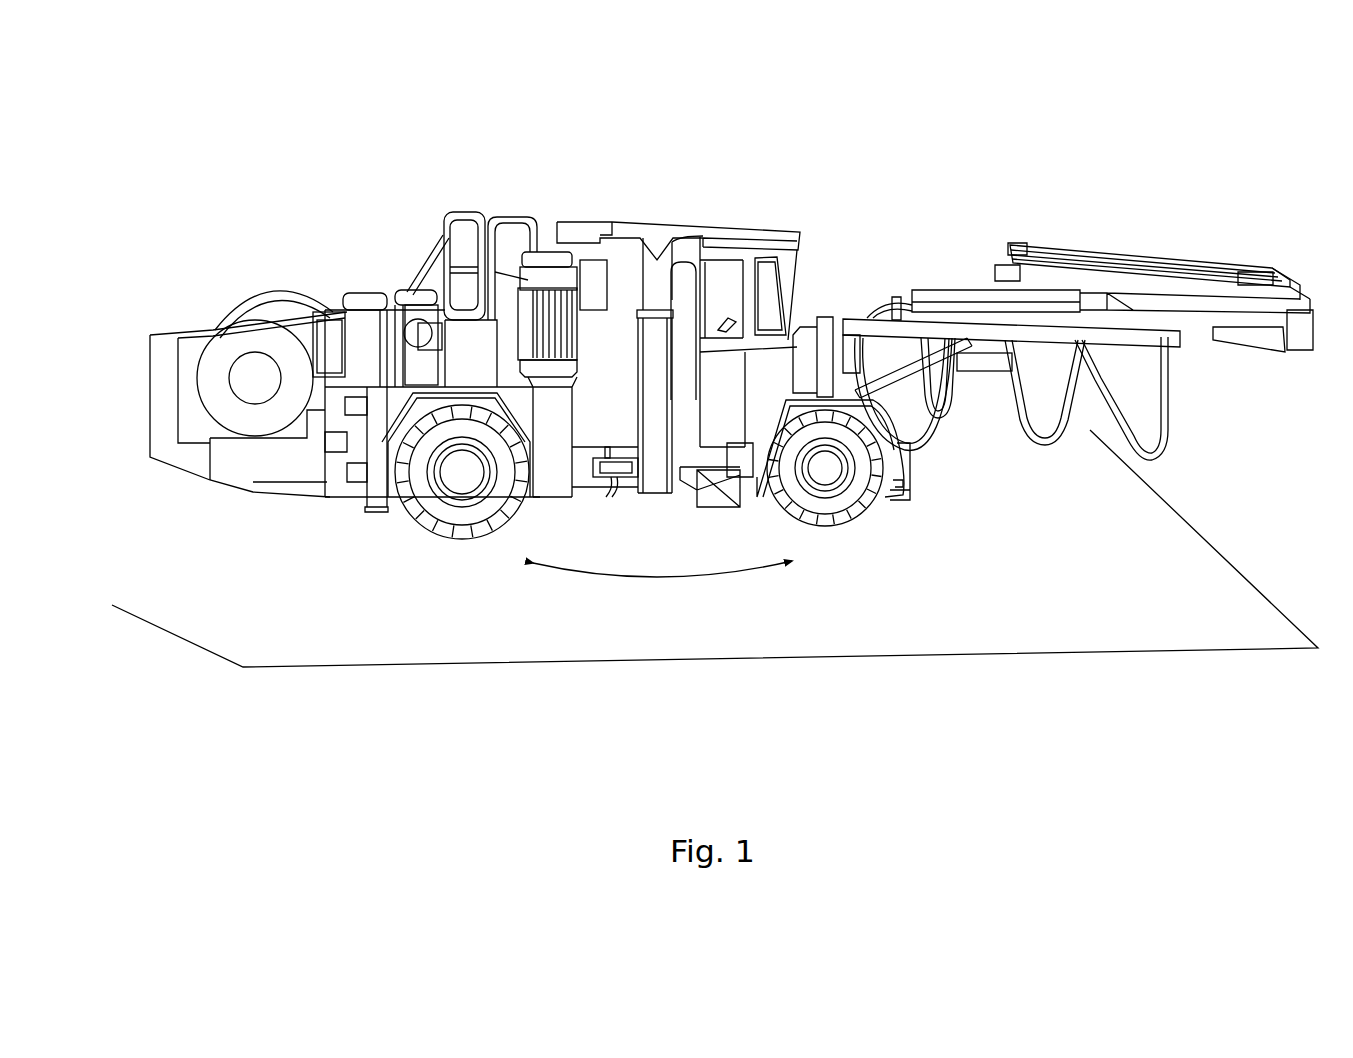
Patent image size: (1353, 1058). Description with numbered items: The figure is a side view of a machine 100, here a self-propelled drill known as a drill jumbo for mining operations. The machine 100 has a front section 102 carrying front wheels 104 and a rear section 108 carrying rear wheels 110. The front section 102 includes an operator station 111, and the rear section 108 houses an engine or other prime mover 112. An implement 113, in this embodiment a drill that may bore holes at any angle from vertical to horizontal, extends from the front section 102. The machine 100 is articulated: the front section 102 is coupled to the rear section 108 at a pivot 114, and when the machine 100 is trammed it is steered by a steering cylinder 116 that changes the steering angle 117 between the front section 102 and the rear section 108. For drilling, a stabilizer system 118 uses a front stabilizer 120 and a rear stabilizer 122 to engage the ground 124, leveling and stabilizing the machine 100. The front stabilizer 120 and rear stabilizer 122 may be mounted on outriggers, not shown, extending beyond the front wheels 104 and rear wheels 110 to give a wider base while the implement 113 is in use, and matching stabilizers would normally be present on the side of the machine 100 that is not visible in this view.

The machine 100 is at (562, 110).
The front section 102 is at (705, 228).
The front wheels 104 is at (837, 530).
The rear section 108 is at (218, 328).
The rear wheels 110 is at (437, 542).
The operator station 111 is at (777, 290).
The engine or other prime mover 112 is at (548, 210).
The implement 113 is at (1147, 258).
The pivot 114 is at (615, 488).
The steering cylinder 116 is at (617, 492).
The steering angle 117 is at (660, 578).
The stabilizer system 118 is at (330, 527).
The front stabilizer 120 is at (893, 493).
The rear stabilizer 122 is at (378, 512).
The ground 124 is at (1010, 643).